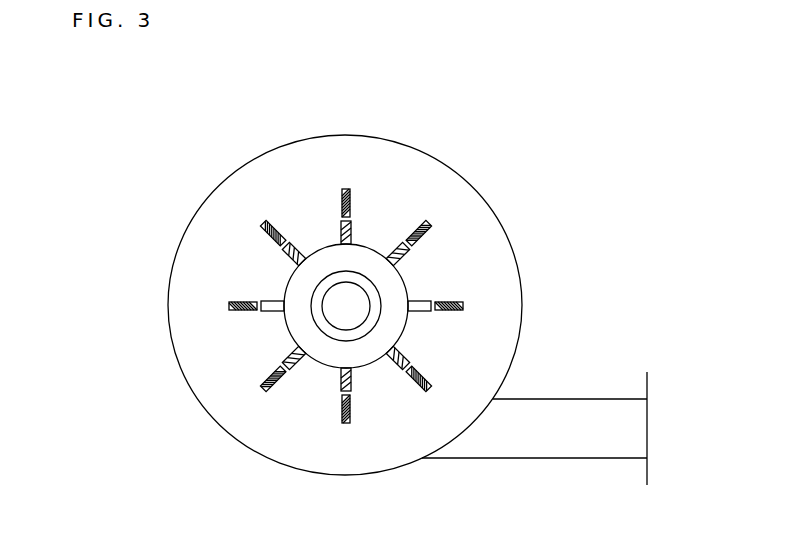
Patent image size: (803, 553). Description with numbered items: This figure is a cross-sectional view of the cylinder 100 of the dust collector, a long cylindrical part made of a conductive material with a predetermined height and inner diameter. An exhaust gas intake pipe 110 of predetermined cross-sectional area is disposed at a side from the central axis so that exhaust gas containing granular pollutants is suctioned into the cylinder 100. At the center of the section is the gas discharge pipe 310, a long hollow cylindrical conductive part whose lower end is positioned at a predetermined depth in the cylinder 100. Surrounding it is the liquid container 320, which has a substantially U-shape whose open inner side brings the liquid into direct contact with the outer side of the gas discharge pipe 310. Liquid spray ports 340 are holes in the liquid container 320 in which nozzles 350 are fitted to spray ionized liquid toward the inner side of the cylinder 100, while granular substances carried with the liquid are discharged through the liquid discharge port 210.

The cylinder 100 is at (181, 243).
The exhaust gas intake pipe 110 is at (558, 398).
The liquid discharge port 210 is at (340, 332).
The gas discharge pipe 310 is at (381, 297).
The liquid container 320 is at (372, 253).
The liquid spray ports 340 is at (291, 280).
The nozzles 350 is at (283, 305).